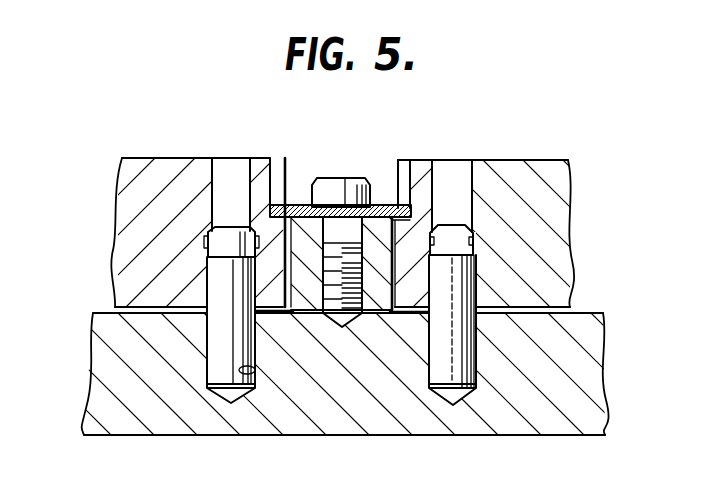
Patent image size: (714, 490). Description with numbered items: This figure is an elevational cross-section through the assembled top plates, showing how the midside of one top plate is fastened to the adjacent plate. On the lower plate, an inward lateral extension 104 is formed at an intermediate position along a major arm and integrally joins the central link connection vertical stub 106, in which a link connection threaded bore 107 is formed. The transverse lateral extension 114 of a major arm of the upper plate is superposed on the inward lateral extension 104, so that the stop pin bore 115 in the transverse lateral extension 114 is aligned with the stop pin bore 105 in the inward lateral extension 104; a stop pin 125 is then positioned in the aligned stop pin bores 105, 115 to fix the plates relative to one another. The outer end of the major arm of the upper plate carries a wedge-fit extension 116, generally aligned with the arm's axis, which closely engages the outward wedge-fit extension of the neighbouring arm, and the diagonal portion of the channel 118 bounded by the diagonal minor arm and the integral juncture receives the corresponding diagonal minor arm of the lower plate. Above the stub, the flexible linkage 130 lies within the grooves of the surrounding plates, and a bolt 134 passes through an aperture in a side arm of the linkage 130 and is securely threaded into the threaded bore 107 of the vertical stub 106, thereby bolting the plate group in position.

The inward lateral extension 104 is at (97, 397).
The stop pin bore 105 is at (255, 372).
The link connection vertical stub 106 is at (308, 310).
The link connection threaded bore 107 is at (294, 218).
The transverse lateral extension 114 is at (115, 243).
The stop pin bore 115 is at (262, 232).
The wedge-fit extension 116 is at (262, 268).
The channel 118 is at (116, 308).
The stop pin 125 is at (213, 281).
The flexible linkage 130 is at (384, 200).
The bolt 134 is at (351, 177).